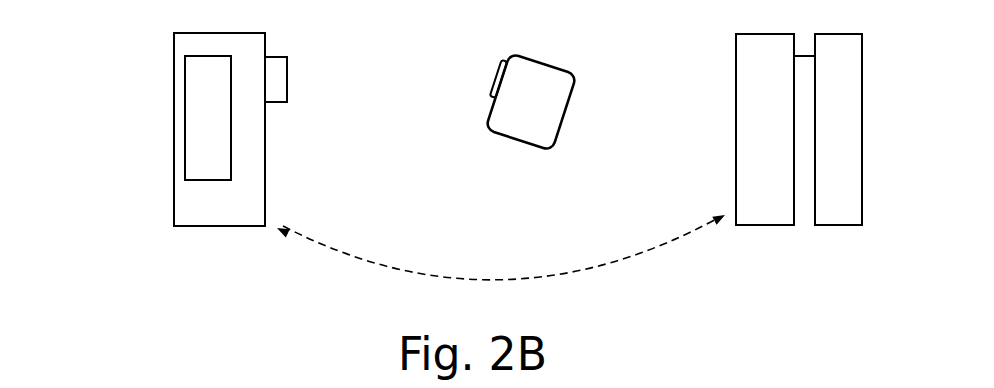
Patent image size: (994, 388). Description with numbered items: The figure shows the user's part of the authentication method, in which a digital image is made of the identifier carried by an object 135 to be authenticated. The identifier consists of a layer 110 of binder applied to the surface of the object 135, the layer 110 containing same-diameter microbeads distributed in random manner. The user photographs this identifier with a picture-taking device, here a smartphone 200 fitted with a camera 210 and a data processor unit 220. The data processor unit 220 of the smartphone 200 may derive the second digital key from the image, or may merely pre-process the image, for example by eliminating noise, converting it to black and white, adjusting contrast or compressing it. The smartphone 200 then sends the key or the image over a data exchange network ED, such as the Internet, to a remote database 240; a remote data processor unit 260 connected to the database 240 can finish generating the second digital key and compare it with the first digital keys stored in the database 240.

The smartphone 200 is at (146, 65).
The camera 210 is at (288, 78).
The data processor unit 220 is at (231, 153).
The layer of binder 110 is at (545, 84).
The object 135 is at (578, 75).
The database 240 is at (767, 225).
The remote data processor unit 260 is at (838, 225).
The data exchange network ED is at (501, 247).